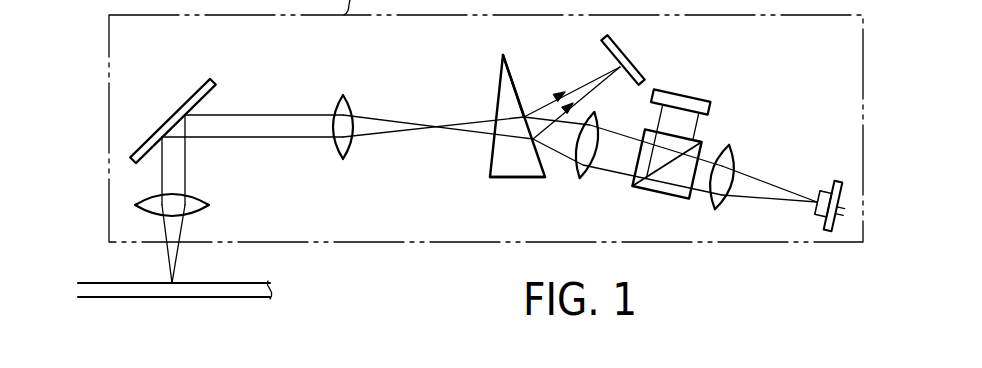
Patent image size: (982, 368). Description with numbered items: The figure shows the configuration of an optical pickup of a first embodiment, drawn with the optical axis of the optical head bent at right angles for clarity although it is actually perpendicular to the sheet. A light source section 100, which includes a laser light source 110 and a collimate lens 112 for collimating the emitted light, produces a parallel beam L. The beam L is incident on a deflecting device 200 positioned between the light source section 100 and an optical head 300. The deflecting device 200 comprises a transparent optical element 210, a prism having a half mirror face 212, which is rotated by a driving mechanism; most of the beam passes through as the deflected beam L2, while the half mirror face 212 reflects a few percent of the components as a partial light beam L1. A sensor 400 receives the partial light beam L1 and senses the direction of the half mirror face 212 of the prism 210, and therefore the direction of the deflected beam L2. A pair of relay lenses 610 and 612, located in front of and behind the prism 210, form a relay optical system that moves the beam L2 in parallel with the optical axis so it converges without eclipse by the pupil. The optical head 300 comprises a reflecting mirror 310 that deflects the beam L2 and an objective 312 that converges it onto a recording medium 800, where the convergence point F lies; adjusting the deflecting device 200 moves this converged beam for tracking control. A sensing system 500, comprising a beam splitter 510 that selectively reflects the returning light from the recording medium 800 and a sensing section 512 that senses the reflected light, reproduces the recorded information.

The light source section 100 is at (815, 163).
The sample (object) 110 is at (815, 208).
The collimate lens 112 is at (732, 147).
The deflecting device 200 is at (495, 80).
The optical element 210 is at (512, 181).
The half mirror face 212 is at (514, 66).
The optical head 300 is at (140, 184).
The reflecting mirror 310 is at (180, 107).
The objective 312 is at (198, 201).
The sensor 400 is at (631, 58).
The sensing system 500 is at (725, 122).
The beam splitter 510 is at (650, 190).
The sensing section 512 is at (688, 97).
The relay lens 610 is at (578, 178).
The relay lens 612 is at (362, 90).
The recording medium 800 is at (240, 297).
The focal point F is at (423, 133).
The beam L is at (613, 172).
The partial light beam L1 is at (585, 82).
The deflected beam L2 is at (275, 114).